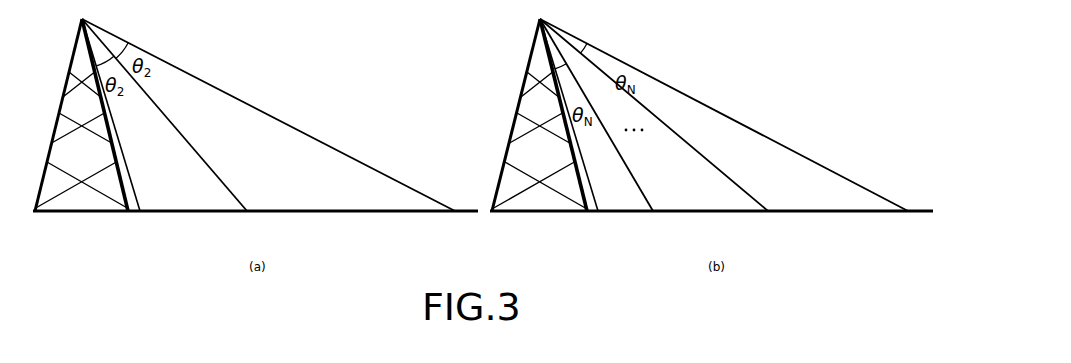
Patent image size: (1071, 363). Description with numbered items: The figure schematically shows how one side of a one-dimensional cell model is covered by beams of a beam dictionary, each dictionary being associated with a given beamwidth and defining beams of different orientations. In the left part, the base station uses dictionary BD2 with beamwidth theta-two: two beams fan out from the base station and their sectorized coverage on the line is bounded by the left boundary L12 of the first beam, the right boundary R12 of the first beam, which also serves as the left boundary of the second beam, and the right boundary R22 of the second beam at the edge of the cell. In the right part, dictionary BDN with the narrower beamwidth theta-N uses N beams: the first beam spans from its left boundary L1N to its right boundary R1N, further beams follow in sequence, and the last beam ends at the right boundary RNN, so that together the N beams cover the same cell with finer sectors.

The left boundary of first beam of dictionary BD2 L12 is at (117, 135).
The right boundary of first beam of dictionary BD2 R12 is at (177, 135).
The right boundary of second beam of dictionary BD2 R22 is at (276, 135).
The left boundary of first beam of dictionary BDN L1N is at (576, 135).
The right boundary of first beam of dictionary BDN R1N is at (605, 135).
The right boundary of Nth beam of dictionary BDN RNN is at (734, 135).